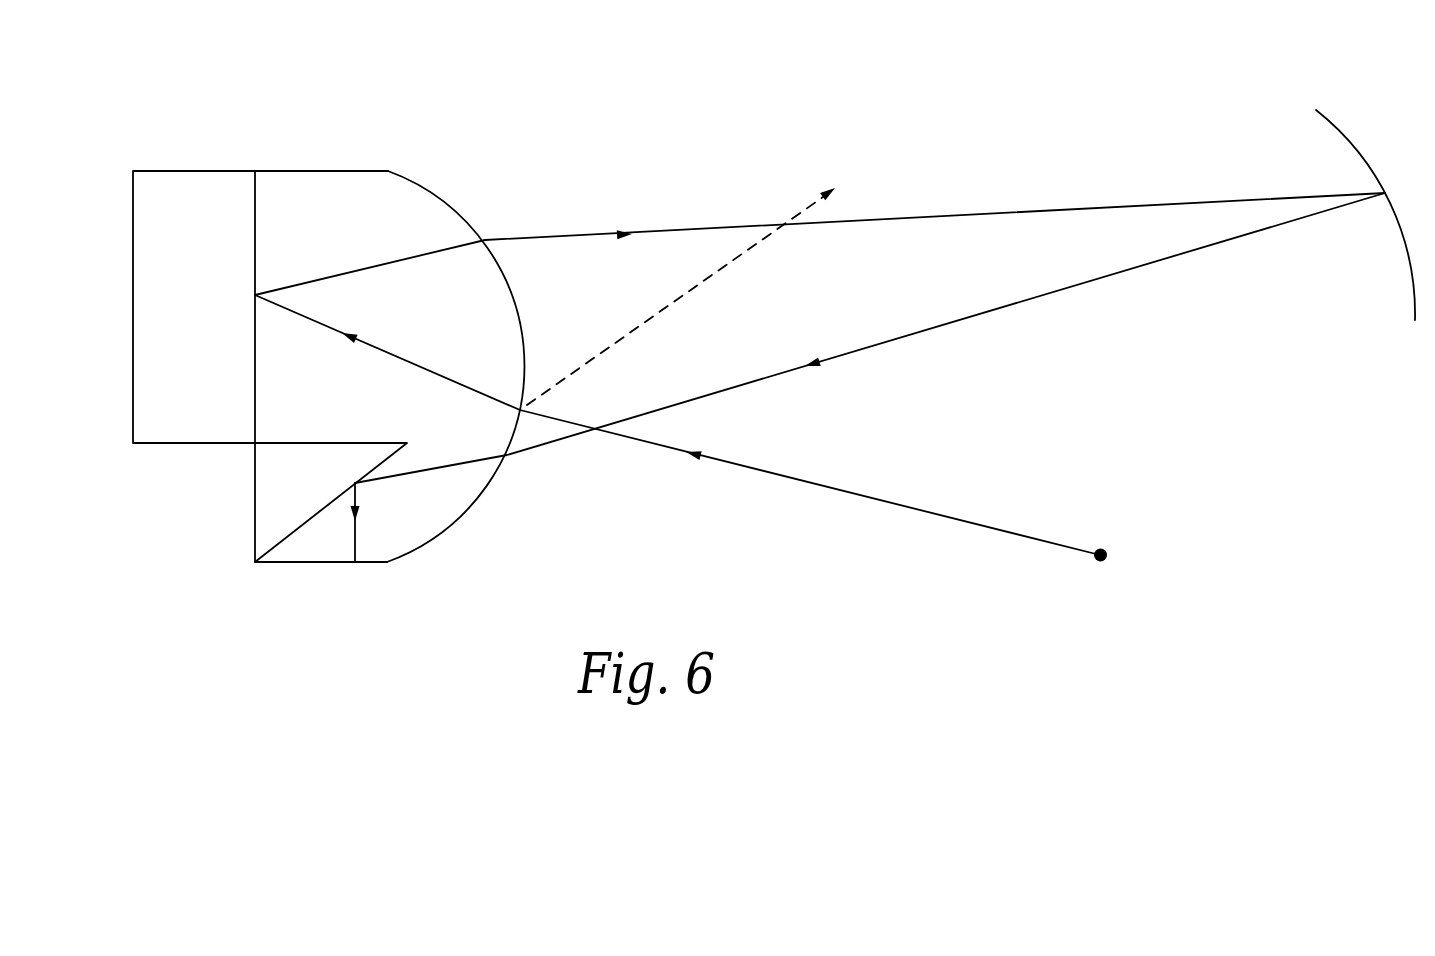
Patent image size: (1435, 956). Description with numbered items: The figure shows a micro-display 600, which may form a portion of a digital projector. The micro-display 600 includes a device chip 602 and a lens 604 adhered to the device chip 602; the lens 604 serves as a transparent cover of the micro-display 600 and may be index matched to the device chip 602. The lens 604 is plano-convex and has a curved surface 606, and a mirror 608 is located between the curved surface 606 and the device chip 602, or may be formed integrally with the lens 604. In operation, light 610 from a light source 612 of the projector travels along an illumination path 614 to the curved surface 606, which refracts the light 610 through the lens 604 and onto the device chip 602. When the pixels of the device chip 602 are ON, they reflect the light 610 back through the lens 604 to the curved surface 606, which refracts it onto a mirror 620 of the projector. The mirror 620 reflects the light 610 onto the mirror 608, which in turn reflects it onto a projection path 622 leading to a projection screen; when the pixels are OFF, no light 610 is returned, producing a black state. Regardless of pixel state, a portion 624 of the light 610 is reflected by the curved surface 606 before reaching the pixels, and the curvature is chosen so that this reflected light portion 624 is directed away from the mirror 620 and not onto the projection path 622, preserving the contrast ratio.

The micro-display 600 is at (296, 116).
The device chip 602 is at (230, 288).
The lens 604 is at (338, 220).
The curved surface 606 is at (463, 210).
The mirror 608 is at (320, 510).
The light 610 is at (892, 502).
The light source 612 is at (1103, 562).
The illumination path 614 is at (1014, 496).
The mirror 620 is at (1350, 140).
The projection path 622 is at (367, 547).
The reflected light portion 624 is at (797, 218).